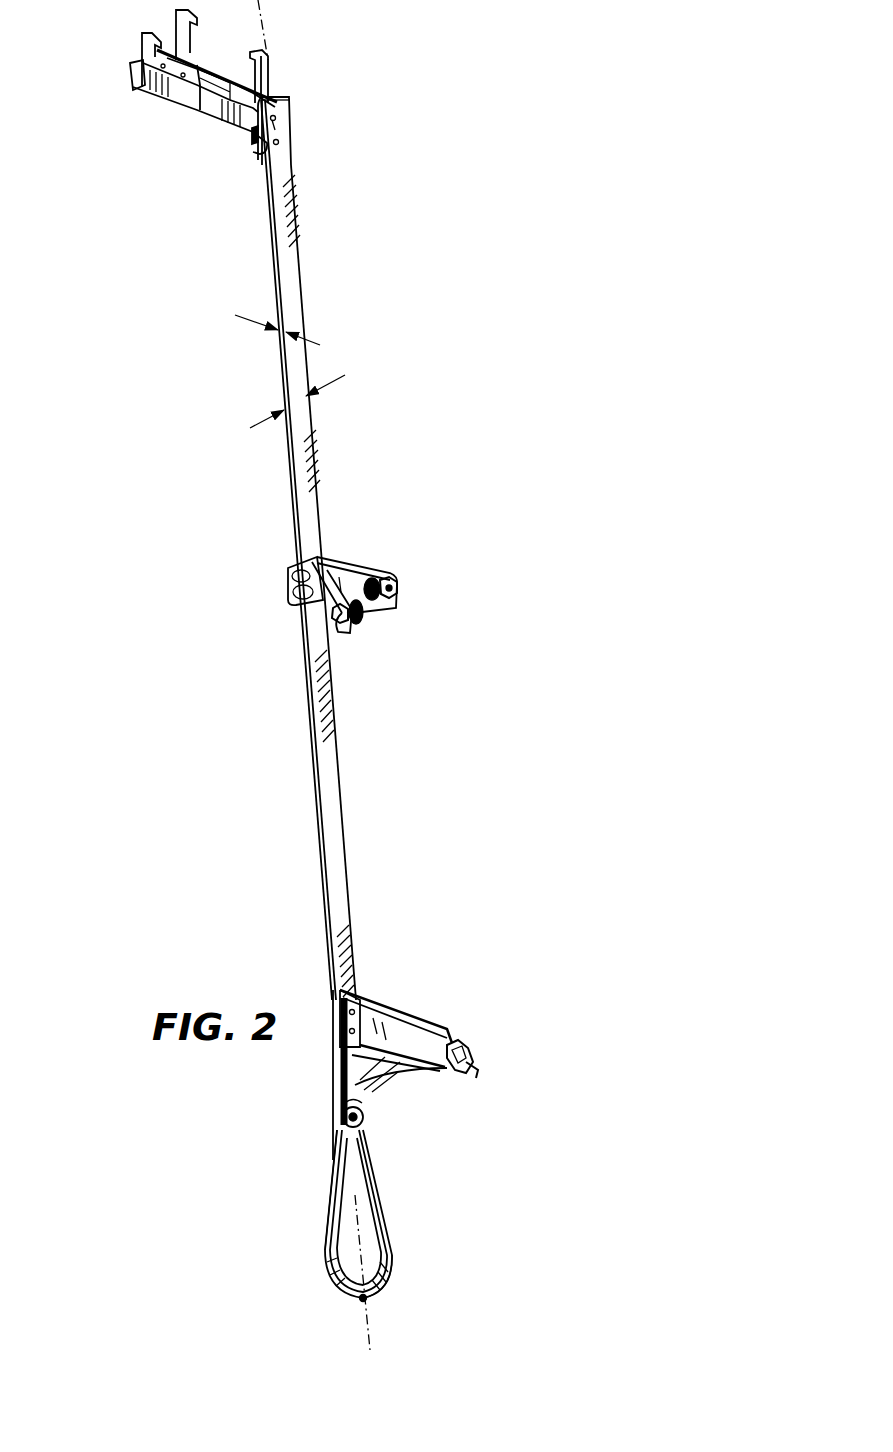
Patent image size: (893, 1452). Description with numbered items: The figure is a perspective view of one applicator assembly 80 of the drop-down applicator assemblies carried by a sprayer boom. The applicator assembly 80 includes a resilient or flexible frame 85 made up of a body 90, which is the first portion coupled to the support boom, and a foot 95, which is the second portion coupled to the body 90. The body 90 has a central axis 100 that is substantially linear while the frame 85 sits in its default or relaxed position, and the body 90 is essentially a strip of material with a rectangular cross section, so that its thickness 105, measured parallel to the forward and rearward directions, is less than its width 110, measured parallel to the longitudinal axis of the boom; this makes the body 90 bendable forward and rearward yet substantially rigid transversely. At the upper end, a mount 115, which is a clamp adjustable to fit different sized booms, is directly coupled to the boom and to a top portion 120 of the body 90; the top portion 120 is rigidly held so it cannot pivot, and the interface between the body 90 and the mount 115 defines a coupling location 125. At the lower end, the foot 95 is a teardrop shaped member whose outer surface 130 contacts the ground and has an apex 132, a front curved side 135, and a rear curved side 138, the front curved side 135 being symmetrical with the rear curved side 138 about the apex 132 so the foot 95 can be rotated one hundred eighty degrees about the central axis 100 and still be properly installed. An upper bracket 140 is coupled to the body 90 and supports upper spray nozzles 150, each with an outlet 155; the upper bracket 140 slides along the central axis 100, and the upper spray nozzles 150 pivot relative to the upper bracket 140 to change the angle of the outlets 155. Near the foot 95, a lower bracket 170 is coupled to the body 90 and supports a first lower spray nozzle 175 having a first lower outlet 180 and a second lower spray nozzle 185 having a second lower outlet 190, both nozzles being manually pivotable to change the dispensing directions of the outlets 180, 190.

The applicator assembly 80 is at (541, 178).
The frame 85 is at (528, 470).
The body 90 is at (298, 280).
The foot 95 is at (455, 1200).
The central axis 100 is at (263, 32).
The thickness 105 is at (252, 321).
The width 110 is at (264, 421).
The mount 115 is at (132, 68).
The top portion 120 is at (272, 127).
The coupling location 125 is at (303, 148).
The outer surface 130 is at (373, 1197).
The apex 132 is at (367, 1302).
The front curved side 135 is at (320, 1212).
The rear curved side 138 is at (405, 1265).
The upper bracket 140 is at (346, 563).
The upper spray nozzles 150 is at (375, 576).
The outlet 155 is at (410, 598).
The lower bracket 170 is at (406, 1010).
The first lower spray nozzle 175 is at (340, 1103).
The first lower outlet 180 is at (346, 1130).
The second lower spray nozzle 185 is at (444, 1040).
The second lower outlet 190 is at (475, 1077).